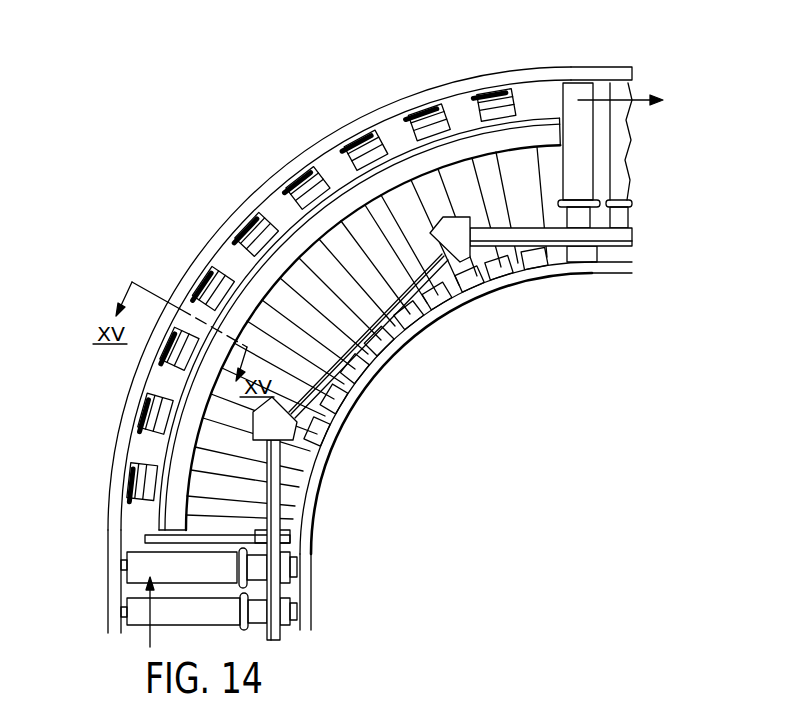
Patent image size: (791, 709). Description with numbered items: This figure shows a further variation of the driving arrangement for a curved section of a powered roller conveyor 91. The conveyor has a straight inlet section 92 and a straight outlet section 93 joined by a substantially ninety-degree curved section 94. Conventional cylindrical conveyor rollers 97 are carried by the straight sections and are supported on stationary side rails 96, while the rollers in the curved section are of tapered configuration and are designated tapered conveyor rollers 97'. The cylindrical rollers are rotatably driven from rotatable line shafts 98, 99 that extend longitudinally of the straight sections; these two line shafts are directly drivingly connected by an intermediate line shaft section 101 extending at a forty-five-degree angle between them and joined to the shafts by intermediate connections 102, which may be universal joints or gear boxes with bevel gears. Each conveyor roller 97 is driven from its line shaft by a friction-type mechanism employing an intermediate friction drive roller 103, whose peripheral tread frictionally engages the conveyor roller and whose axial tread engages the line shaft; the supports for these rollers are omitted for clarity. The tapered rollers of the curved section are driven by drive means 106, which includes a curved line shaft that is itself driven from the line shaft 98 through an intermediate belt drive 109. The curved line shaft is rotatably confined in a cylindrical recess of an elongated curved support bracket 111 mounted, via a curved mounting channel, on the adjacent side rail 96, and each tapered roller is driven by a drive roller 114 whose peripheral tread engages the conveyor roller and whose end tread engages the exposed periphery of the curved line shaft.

The powered roller conveyor 91 is at (465, 463).
The straight inlet section 92 is at (96, 603).
The straight outlet section 93 is at (621, 58).
The curved section 94 is at (221, 224).
The side rails 96 is at (412, 105).
The conveyor rollers 97 is at (365, 349).
The tapered conveyor rollers 97' is at (391, 333).
The line shaft 98 is at (276, 590).
The line shaft 99 is at (603, 238).
The intermediate line shaft section 101 is at (350, 347).
The intermediate connections 102 is at (454, 245).
The intermediate friction drive rollers 103 is at (592, 203).
The drive means 106 is at (150, 445).
The intermediate belt drive 109 is at (222, 537).
The support bracket 111 is at (262, 282).
The drive roller 114 is at (270, 237).